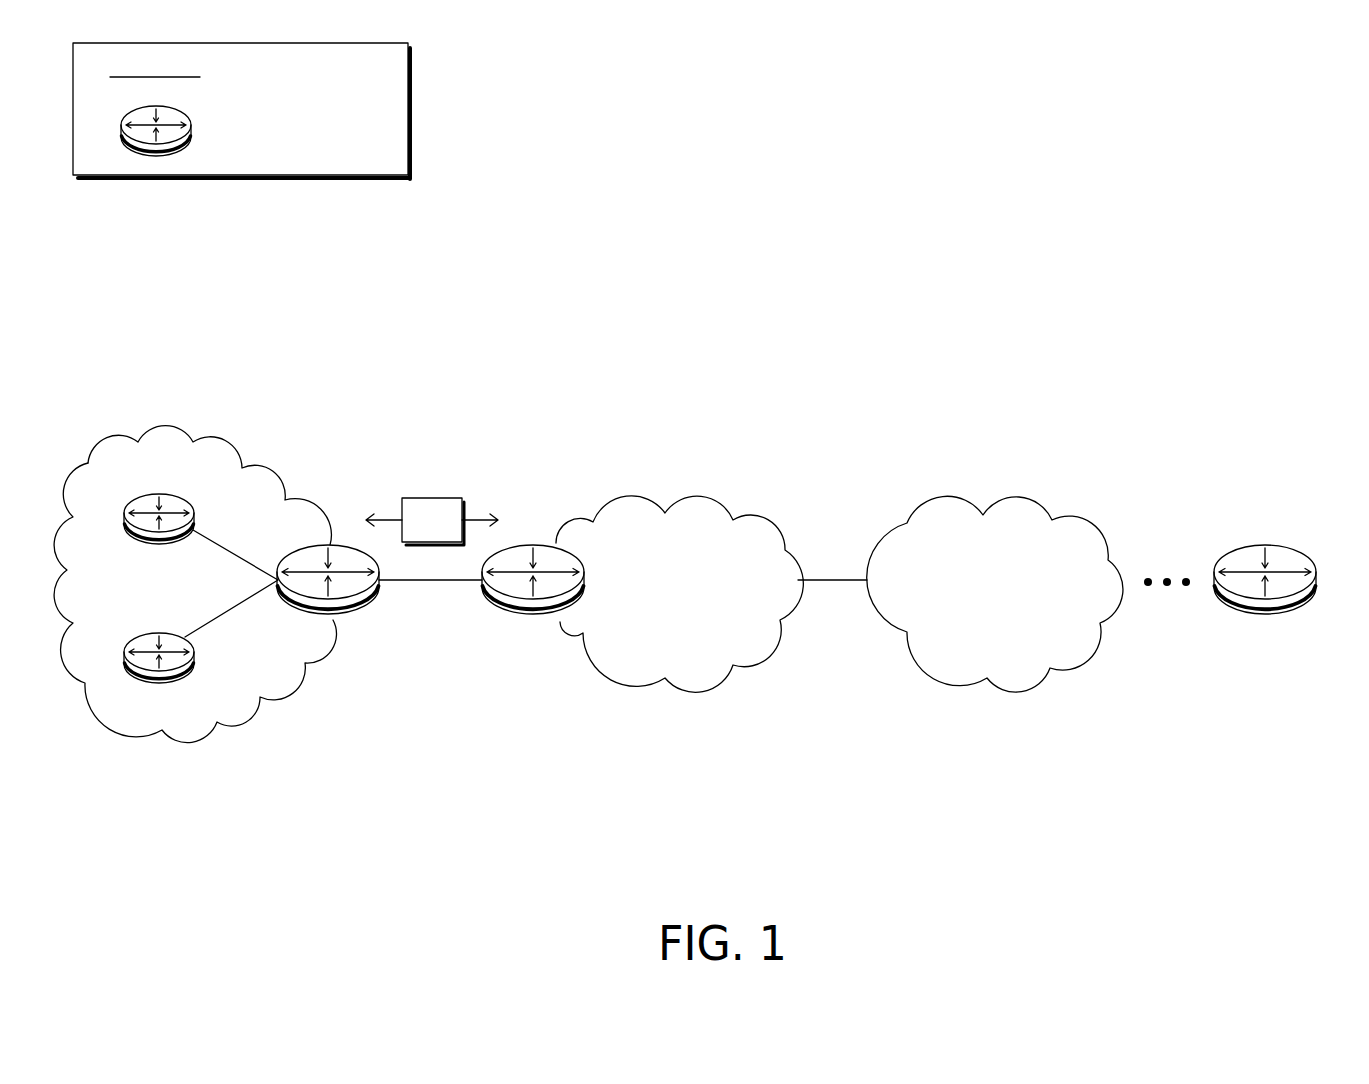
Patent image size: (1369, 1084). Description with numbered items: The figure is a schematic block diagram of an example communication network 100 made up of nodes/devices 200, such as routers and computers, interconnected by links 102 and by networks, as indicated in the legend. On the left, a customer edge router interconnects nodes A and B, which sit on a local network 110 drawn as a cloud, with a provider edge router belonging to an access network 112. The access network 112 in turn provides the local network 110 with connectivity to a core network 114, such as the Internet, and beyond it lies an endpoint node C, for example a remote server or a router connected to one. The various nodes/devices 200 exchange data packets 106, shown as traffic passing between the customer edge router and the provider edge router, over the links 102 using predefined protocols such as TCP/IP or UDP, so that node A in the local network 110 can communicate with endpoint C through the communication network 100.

The communication network 100 is at (1268, 104).
The links 102 is at (223, 75).
The data packets 106 is at (413, 531).
The local network 110 is at (215, 744).
The access network 112 is at (652, 636).
The core network 114 is at (972, 636).
The nodes/devices 200 is at (246, 131).